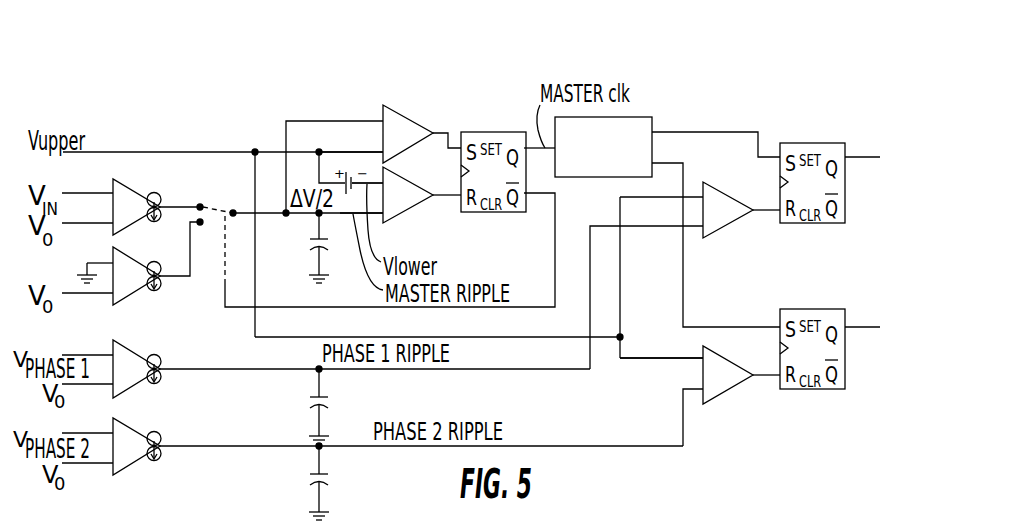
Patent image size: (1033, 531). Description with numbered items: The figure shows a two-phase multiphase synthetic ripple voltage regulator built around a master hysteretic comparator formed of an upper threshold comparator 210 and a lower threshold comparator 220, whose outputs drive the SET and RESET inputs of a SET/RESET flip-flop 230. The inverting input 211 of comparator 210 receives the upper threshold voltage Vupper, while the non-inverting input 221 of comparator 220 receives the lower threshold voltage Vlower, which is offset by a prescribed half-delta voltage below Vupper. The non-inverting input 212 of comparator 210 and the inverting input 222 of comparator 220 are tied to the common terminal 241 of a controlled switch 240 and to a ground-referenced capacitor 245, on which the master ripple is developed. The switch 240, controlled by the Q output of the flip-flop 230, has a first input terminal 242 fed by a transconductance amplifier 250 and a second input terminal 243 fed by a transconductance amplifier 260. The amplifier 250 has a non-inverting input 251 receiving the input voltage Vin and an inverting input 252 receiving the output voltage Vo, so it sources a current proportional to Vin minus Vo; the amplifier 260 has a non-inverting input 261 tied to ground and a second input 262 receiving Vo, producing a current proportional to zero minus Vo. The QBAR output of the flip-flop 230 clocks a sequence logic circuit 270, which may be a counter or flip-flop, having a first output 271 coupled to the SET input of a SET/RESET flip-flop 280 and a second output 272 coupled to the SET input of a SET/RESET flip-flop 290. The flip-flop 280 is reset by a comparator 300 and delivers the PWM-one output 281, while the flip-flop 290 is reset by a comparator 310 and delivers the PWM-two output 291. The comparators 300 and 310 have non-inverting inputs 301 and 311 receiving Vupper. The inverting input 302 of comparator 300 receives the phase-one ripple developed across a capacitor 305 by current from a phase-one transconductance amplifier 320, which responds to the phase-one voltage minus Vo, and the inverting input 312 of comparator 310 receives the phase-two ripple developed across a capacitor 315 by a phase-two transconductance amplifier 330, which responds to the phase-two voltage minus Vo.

The upper threshold comparator 210 is at (403, 113).
The first inverting input of comparator 210 211 is at (382, 150).
The second non-inverting input of comparator 210 212 is at (372, 119).
The lower threshold comparator 220 is at (417, 208).
The first non-inverting input of comparator 220 221 is at (387, 181).
The second inverting input of comparator 220 222 is at (379, 216).
The SET/RESET flip-flop 230 is at (475, 132).
The controlled switch 240 is at (213, 222).
The common terminal of switch 240 241 is at (233, 211).
The first input terminal of switch 240 242 is at (199, 205).
The second input terminal of switch 240 243 is at (198, 222).
The capacitor 245 is at (310, 241).
The transconductance amplifier 250 is at (147, 178).
The first non-inverting input of amplifier 250 251 is at (110, 190).
The second inverting input of amplifier 250 252 is at (110, 222).
The transconductance amplifier 260 is at (133, 293).
The first non-inverting input of amplifier 260 261 is at (86, 264).
The second input of amplifier 260 262 is at (110, 294).
The sequence logic circuit 270 is at (641, 117).
The first output of sequence logic 270 271 is at (654, 132).
The second output of sequence logic 270 272 is at (654, 163).
The SET/RESET flip-flop 280 is at (798, 143).
The PWM1 output of flip-flop 280 281 is at (849, 161).
The SET/RESET flip-flop 290 is at (797, 309).
The PWM2 output of flip-flop 290 291 is at (850, 330).
The comparator 300 is at (726, 197).
The first non-inverting input of comparator 300 301 is at (698, 195).
The inverting input of comparator 300 302 is at (700, 230).
The capacitor 305 is at (333, 402).
The comparator 310 is at (748, 351).
The first non-inverting input of comparator 310 311 is at (698, 352).
The inverting input of comparator 310 312 is at (698, 392).
The capacitor 315 is at (332, 478).
The phase 1 transconductance amplifier 320 is at (133, 393).
The phase 2 transconductance amplifier 330 is at (133, 470).